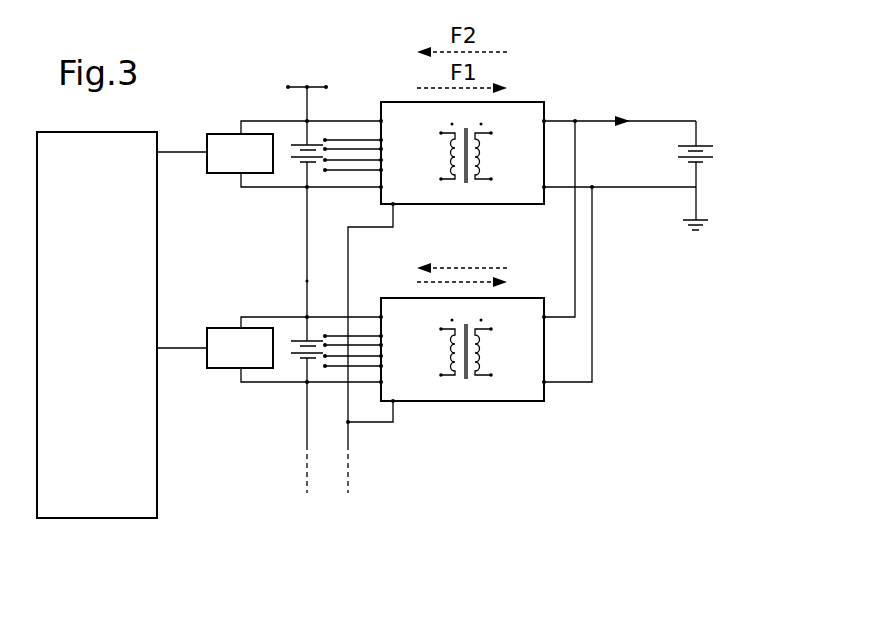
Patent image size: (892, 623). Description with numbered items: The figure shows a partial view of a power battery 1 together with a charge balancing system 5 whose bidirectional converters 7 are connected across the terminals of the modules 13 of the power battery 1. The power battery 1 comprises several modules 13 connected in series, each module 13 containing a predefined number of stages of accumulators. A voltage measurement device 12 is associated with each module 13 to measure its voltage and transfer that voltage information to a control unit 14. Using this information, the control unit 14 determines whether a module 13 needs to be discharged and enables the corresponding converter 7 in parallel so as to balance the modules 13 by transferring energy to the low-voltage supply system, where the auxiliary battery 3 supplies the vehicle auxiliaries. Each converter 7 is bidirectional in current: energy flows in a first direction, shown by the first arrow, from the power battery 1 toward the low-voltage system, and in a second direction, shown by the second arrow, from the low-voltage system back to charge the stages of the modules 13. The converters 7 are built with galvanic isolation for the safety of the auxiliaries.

The power battery 1 is at (280, 62).
The auxiliary battery 3 is at (717, 124).
The charge balancing system 5 is at (542, 74).
The converter 7 is at (545, 110).
The voltage measurement device 12 is at (227, 166).
The module 13 is at (328, 105).
The control unit 14 is at (112, 309).